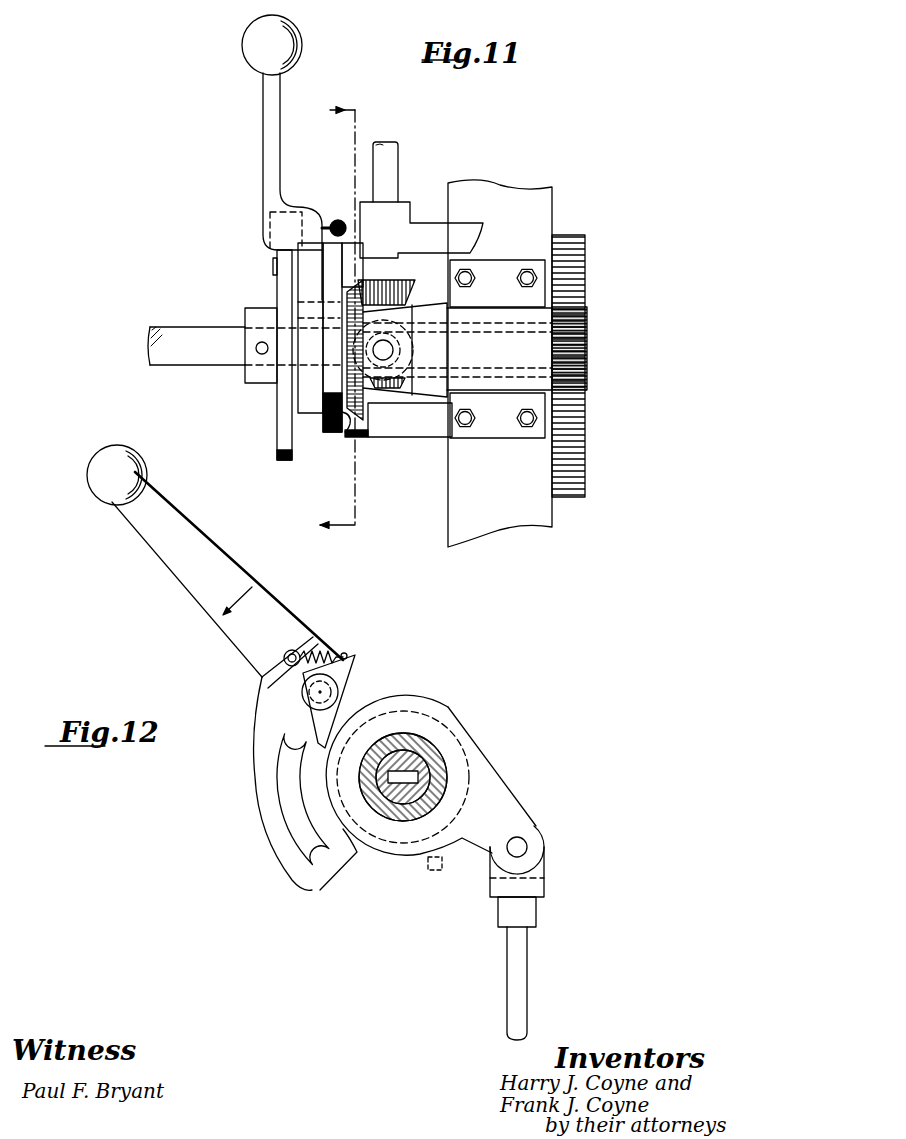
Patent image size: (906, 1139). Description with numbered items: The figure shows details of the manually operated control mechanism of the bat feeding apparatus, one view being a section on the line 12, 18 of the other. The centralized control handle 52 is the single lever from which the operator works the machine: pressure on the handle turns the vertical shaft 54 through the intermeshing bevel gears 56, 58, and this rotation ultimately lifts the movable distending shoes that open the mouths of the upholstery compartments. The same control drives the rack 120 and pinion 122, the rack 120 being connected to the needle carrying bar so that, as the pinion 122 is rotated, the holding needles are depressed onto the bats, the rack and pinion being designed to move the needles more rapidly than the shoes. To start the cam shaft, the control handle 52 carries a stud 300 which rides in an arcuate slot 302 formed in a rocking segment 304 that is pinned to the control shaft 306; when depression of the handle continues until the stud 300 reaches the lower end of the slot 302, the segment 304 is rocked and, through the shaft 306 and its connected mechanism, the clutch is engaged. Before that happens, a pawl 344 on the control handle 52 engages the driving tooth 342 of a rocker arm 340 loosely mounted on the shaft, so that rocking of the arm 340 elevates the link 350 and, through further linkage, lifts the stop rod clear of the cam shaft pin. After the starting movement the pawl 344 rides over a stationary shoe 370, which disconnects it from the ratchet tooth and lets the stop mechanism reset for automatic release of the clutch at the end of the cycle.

In FIG. 11, the control handle 52 is at (270, 123).
In FIG. 12, the control handle 52 is at (188, 568).
In FIG. 11, the section line 12 is at (329, 313).
In FIG. 11, the section line 18 is at (313, 526).
In FIG. 11, the vertical shaft 54 is at (390, 168).
In FIG. 11, the bevel gear 56 is at (418, 283).
In FIG. 11, the control shaft 306 is at (214, 343).
In FIG. 11, the rack 120 is at (588, 280).
In FIG. 11, the pinion 122 is at (588, 333).
In FIG. 11, the bevel gear 58 is at (352, 438).
In FIG. 12, the stud 300 is at (330, 700).
In FIG. 12, the rocker arm 340 is at (435, 781).
In FIG. 12, the pawl 344 is at (318, 742).
In FIG. 12, the arcuate slot 302 is at (266, 808).
In FIG. 12, the rocking segment 304 is at (318, 885).
In FIG. 12, the driving tooth 342 is at (357, 855).
In FIG. 12, the stationary shoe 370 is at (432, 870).
In FIG. 12, the link 350 is at (528, 965).